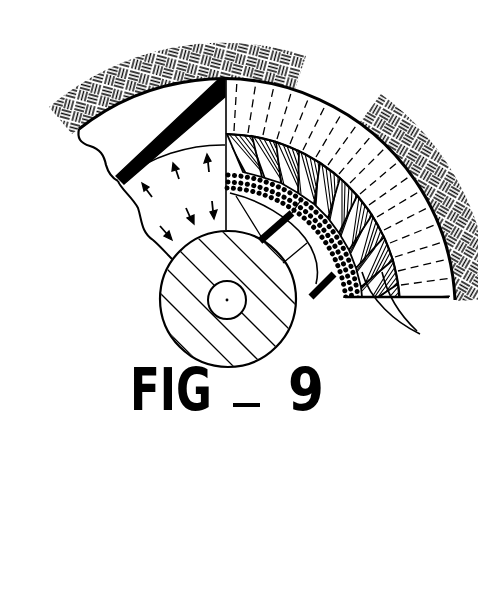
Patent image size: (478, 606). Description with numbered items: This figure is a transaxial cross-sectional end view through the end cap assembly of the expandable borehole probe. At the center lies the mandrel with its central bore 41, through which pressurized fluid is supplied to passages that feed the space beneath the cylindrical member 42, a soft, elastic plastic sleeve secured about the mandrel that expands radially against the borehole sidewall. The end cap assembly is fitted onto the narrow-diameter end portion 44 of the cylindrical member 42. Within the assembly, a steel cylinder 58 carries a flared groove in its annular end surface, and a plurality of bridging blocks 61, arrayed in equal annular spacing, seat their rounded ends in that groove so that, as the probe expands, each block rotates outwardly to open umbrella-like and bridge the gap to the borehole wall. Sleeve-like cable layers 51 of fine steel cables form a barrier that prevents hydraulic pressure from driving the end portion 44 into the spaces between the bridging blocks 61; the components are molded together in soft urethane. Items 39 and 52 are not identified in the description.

The roller 39 is at (158, 296).
The central bore 41 is at (222, 312).
The cylindrical member 42 is at (120, 150).
The end portion 44 is at (304, 282).
The cable layer 51 is at (352, 296).
The bead layer 52 is at (343, 296).
The steel cylinder 58 is at (415, 312).
The bridging block 61 is at (322, 100).